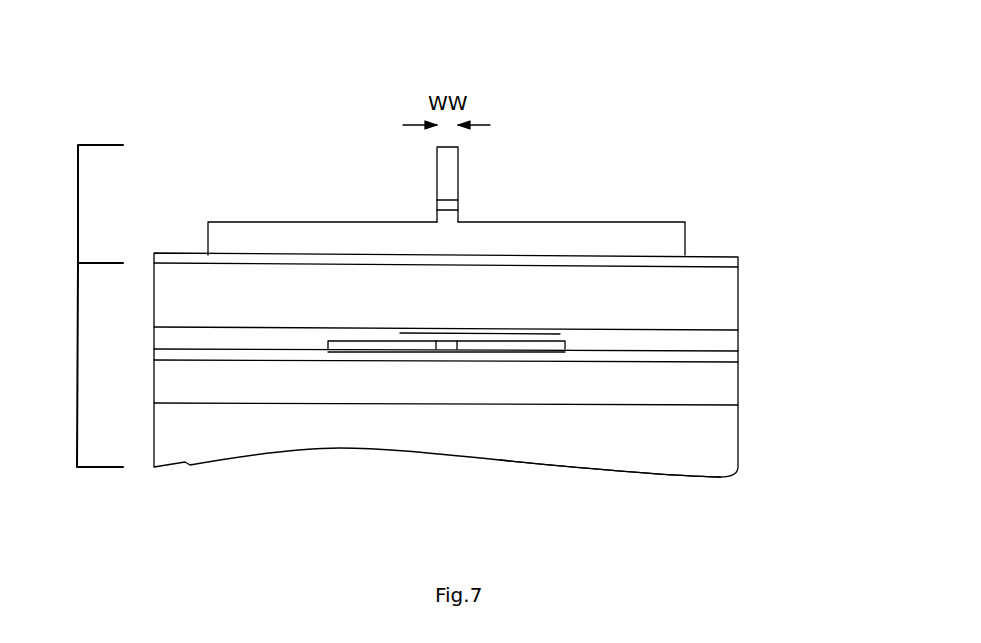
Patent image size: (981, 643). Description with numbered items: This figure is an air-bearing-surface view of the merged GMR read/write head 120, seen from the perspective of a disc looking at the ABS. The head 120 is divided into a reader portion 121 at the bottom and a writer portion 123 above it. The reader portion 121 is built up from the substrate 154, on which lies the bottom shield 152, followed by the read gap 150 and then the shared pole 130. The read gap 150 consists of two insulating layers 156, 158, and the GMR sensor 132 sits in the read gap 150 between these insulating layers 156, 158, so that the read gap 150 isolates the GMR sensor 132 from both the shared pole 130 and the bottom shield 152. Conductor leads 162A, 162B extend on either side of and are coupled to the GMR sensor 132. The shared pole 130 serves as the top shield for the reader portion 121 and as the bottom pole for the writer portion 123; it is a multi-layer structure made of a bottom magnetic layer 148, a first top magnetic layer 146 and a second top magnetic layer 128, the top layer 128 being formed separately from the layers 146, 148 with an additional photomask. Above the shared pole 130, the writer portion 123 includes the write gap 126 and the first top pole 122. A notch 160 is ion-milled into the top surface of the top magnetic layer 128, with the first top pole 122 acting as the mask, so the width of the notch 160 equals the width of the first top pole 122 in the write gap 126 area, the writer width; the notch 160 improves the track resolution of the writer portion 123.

The read/write head 120 is at (183, 68).
The reader portion 121 is at (78, 350).
The first top pole 122 is at (448, 190).
The writer portion 123 is at (78, 200).
The write gap 126 is at (452, 205).
The second top magnetic layer 128 is at (543, 245).
The shared pole 130 is at (741, 215).
The GMR sensor 132 is at (447, 348).
The first top magnetic layer 146 is at (577, 262).
The bottom magnetic layer 148 is at (608, 300).
The read gap 150 is at (741, 332).
The bottom shield 152 is at (545, 393).
The substrate 154 is at (640, 447).
The insulating layer 156 is at (477, 335).
The insulating layer 158 is at (383, 353).
The notch 160 is at (443, 217).
The conductor lead 162A is at (355, 345).
The conductor lead 162B is at (540, 346).